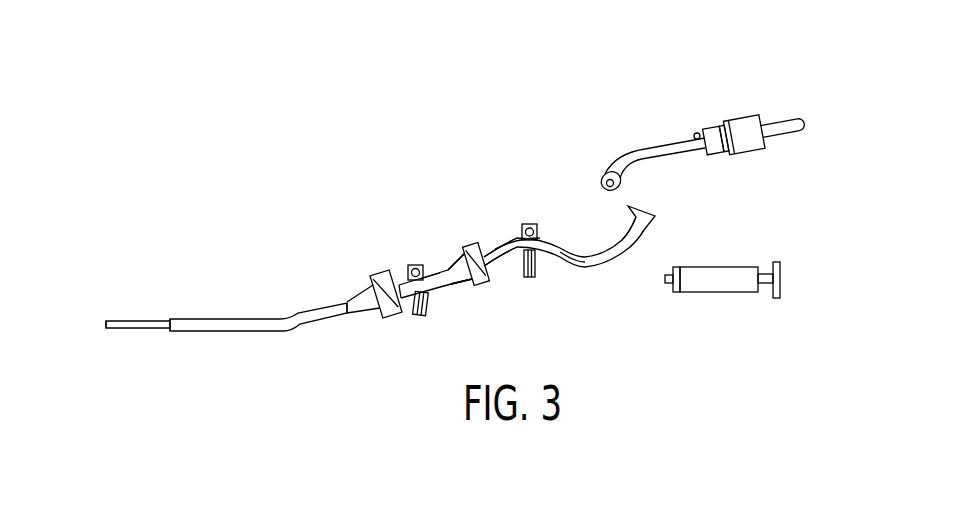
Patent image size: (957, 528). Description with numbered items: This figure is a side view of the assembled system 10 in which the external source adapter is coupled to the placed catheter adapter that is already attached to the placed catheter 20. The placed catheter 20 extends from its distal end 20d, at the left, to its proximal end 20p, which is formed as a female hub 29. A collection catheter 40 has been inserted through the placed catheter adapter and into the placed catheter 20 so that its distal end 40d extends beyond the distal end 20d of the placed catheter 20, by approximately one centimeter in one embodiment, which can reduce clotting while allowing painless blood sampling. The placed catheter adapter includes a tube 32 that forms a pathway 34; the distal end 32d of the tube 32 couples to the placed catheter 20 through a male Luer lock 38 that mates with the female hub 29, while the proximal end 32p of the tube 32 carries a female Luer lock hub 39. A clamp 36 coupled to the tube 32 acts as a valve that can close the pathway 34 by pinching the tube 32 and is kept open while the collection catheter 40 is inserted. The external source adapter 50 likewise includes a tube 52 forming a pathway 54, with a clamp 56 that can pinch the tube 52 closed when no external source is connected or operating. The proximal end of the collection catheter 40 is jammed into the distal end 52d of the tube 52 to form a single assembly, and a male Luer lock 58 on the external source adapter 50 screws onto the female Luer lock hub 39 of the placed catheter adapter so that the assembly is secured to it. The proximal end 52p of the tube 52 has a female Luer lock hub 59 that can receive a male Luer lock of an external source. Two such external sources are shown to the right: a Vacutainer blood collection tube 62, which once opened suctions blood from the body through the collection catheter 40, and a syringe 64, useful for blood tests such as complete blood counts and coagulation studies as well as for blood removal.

The system 10 is at (180, 101).
The placed catheter 20 is at (283, 332).
The distal end of the placed catheter 20d is at (170, 318).
The proximal end of the placed catheter 20p is at (357, 318).
The female hub 29 is at (356, 296).
The tube 32 is at (449, 290).
The distal end of the tube 32d is at (410, 305).
The proximal end of the tube 32p is at (469, 294).
The pathway 34 is at (439, 272).
The clamp 36 is at (412, 264).
The male Luer lock 38 is at (381, 272).
The female Luer lock hub 39 is at (460, 256).
The collection catheter 40 is at (140, 329).
The distal end of the collection catheter 40d is at (107, 318).
The external source adapter 50 is at (593, 242).
The tube 52 is at (573, 272).
The distal end of the tube 52d is at (478, 295).
The proximal end of the tube 52p is at (658, 231).
The pathway 54 is at (511, 240).
The clamp 56 is at (535, 224).
The male Luer lock 58 is at (466, 242).
The female Luer lock hub 59 is at (641, 203).
The Vacutainer blood collection tube 62 is at (763, 108).
The syringe 64 is at (718, 293).